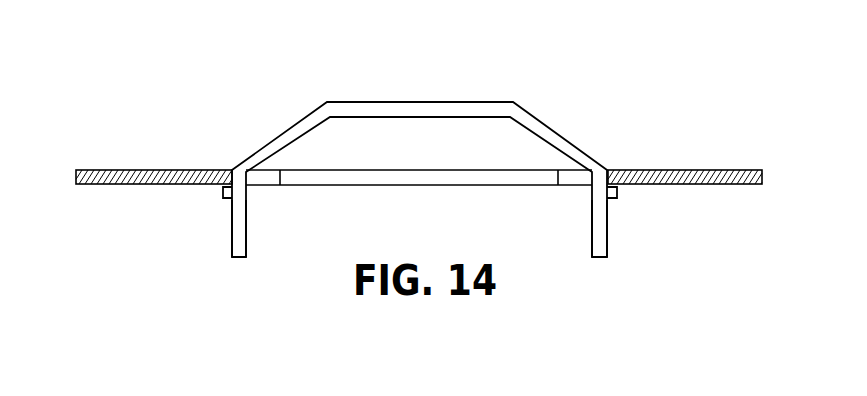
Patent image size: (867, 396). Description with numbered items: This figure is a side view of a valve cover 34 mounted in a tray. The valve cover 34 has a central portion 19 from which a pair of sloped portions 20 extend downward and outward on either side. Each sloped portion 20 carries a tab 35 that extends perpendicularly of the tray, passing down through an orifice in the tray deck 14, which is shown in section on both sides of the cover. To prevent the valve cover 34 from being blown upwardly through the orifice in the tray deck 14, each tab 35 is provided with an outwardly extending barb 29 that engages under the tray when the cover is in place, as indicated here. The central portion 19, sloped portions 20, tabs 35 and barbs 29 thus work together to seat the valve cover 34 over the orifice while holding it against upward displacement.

The tray deck 14 is at (690, 171).
The central portion 19 is at (365, 101).
The sloped portions 20 is at (284, 132).
The barb 29 is at (223, 190).
The valve cover 34 is at (456, 94).
The tab 35 is at (243, 232).